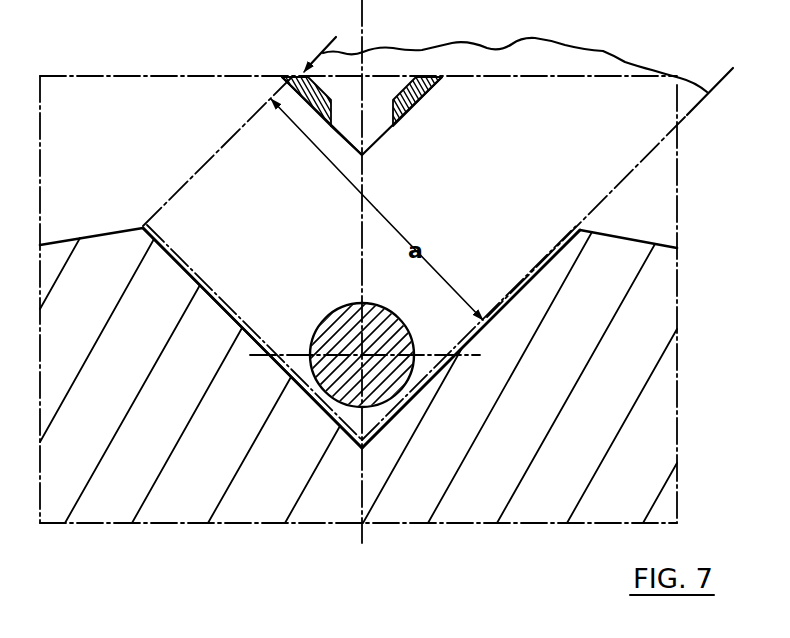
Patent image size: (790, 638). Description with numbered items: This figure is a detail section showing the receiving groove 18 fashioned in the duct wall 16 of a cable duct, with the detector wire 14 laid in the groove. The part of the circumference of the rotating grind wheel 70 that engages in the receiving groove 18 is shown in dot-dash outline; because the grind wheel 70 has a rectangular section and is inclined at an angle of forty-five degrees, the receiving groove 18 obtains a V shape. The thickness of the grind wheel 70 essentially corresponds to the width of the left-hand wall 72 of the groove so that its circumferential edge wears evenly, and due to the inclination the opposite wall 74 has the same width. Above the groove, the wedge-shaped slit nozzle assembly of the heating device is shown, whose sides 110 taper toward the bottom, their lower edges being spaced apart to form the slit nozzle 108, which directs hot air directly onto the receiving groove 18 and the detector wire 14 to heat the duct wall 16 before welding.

The detector wire 14 is at (331, 332).
The duct wall 16 is at (609, 408).
The receiving groove 18 is at (468, 331).
The grind wheel 70 is at (593, 122).
The left-hand wall 72 is at (225, 305).
The opposite wall 74 is at (528, 279).
The slit nozzle 108 is at (352, 140).
The sides 110 is at (321, 84).